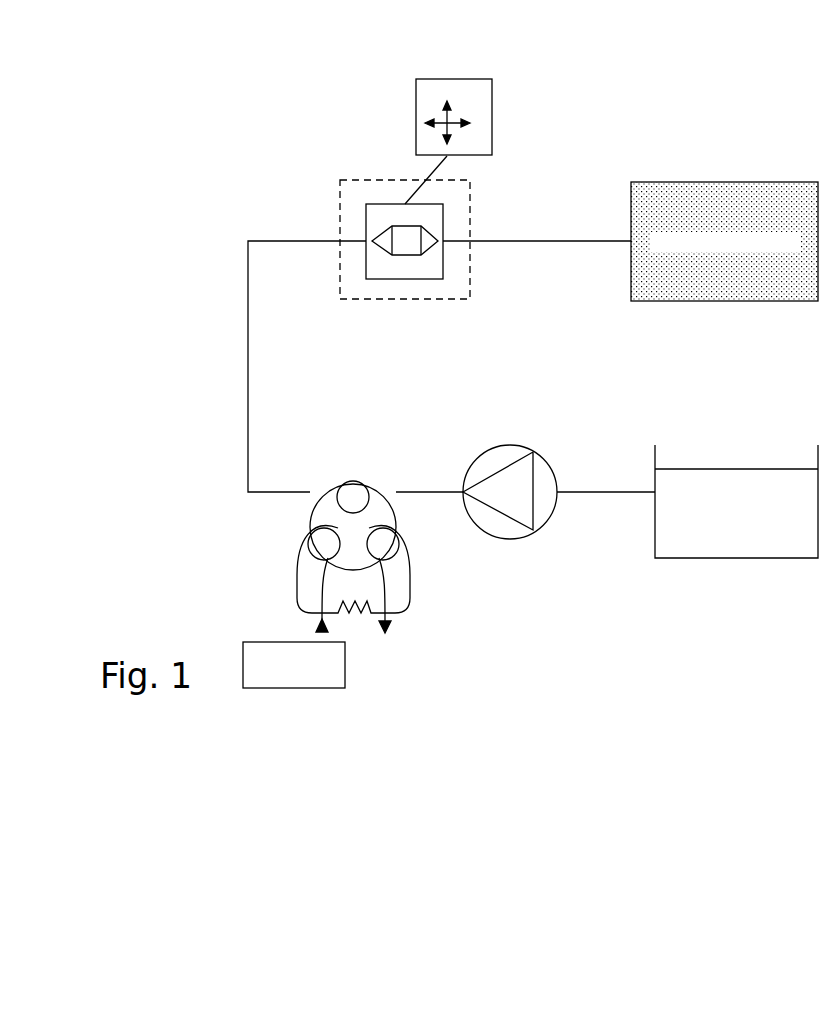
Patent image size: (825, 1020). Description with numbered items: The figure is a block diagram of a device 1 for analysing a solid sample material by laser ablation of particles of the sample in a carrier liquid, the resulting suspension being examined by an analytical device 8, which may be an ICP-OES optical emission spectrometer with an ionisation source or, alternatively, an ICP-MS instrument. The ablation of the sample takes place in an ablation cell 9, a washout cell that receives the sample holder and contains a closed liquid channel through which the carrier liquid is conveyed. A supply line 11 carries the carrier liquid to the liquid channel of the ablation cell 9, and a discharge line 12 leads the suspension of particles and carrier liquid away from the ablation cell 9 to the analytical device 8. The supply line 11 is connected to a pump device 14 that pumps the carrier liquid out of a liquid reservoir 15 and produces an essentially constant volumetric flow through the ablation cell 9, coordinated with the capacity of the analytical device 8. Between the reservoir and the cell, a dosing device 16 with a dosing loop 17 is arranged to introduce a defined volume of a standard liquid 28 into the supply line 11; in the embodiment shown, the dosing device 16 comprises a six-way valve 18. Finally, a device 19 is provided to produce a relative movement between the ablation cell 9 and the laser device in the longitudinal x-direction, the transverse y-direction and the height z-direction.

The device 1 is at (583, 158).
The analytical device 8 is at (782, 182).
The ablation cell 9 is at (363, 180).
The supply line 11 is at (315, 238).
The discharge line 12 is at (485, 240).
The pump device 14 is at (545, 534).
The liquid reservoir 15 is at (745, 562).
The dosing device 16 is at (288, 570).
The dosing loop 17 is at (348, 618).
The 6-way valve 18 is at (391, 558).
The device for producing relative movement 19 is at (493, 102).
The standard liquid 28 is at (253, 688).